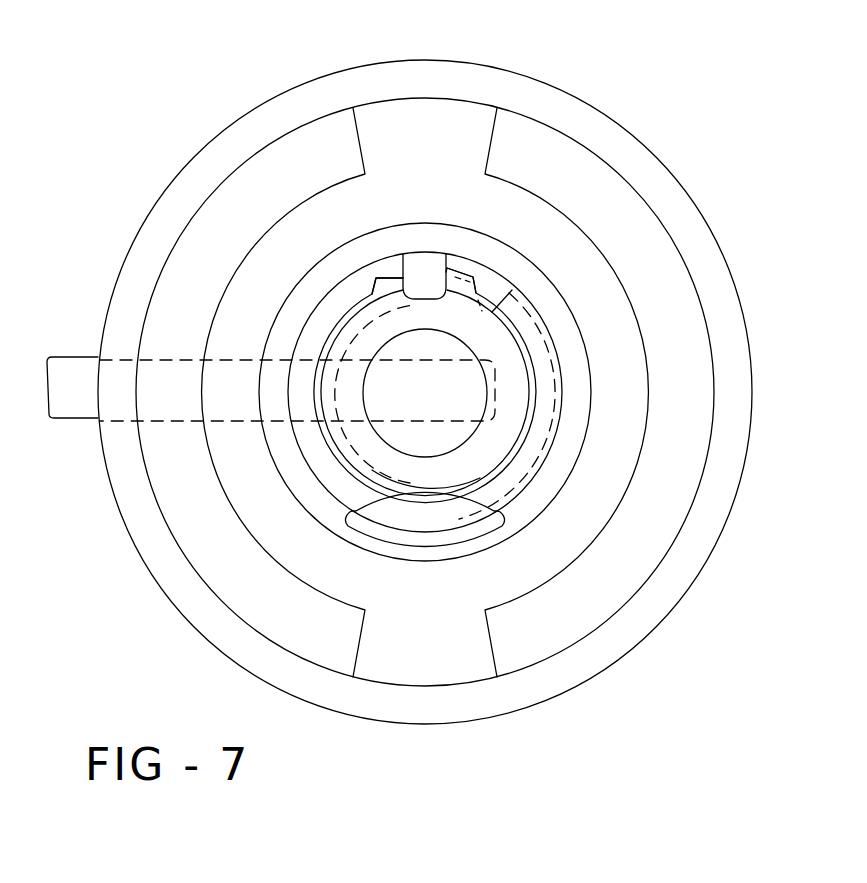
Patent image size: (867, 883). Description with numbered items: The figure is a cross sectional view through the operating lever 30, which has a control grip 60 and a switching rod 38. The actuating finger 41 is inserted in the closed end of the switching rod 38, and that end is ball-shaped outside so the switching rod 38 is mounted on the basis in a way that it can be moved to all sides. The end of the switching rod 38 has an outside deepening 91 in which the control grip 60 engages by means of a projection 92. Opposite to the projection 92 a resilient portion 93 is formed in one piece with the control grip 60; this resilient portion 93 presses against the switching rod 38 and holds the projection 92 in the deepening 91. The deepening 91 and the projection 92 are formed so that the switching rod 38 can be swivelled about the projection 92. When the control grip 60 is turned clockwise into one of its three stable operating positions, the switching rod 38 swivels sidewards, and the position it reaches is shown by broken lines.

The operating lever 30 is at (717, 107).
The switching rod 38 is at (372, 470).
The actuating finger 41 is at (72, 366).
The control grip 60 is at (449, 63).
The outside deepening 91 is at (418, 273).
The projection 92 is at (425, 275).
The resilient portion 93 is at (403, 549).